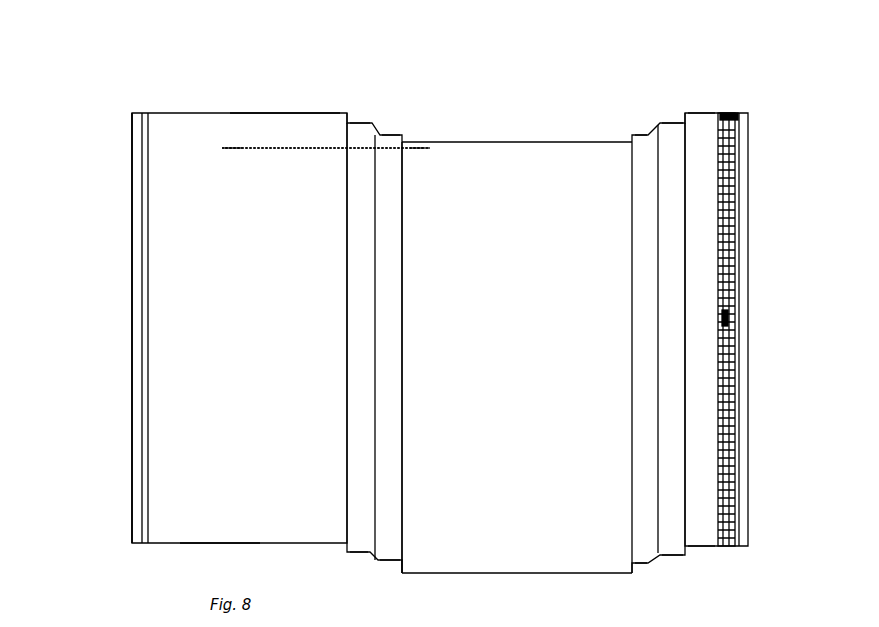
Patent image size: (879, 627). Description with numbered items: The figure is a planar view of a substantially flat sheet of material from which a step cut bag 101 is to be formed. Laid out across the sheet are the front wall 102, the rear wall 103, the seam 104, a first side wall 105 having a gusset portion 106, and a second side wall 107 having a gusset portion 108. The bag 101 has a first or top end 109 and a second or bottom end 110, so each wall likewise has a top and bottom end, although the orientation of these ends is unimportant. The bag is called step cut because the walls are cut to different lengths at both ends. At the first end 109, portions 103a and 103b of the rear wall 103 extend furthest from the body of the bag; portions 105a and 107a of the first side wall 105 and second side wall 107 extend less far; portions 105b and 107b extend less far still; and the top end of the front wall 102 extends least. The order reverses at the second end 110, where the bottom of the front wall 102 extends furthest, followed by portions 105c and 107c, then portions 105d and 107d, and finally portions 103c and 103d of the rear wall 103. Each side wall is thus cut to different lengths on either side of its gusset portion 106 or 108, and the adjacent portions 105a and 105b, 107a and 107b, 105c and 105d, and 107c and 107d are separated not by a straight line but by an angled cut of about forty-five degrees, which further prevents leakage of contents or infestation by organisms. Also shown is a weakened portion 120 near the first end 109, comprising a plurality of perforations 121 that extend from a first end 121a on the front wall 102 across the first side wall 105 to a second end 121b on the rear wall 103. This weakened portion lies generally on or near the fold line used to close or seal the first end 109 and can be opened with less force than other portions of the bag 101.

The step cut bag 101 is at (517, 325).
The front wall 102 is at (488, 558).
The rear wall 103 is at (172, 432).
The rear wall portion 103a is at (288, 124).
The rear wall portion 103b is at (702, 124).
The rear wall portion 103c is at (222, 538).
The rear wall portion 103d is at (703, 541).
The seam 104 is at (720, 195).
The first side wall 105 is at (390, 302).
The first side wall portion 105a is at (359, 136).
The first side wall portion 105b is at (394, 144).
The first side wall portion 105c is at (386, 559).
The first side wall portion 105d is at (350, 549).
The gusset portion 106 is at (375, 355).
The second side wall 107 is at (670, 275).
The second side wall portion 107a is at (670, 132).
The second side wall portion 107b is at (641, 141).
The second side wall portion 107c is at (644, 561).
The second side wall portion 107d is at (677, 552).
The gusset portion 108 is at (658, 357).
The first end 109 is at (103, 125).
The second end 110 is at (83, 549).
The weakened portion 120 is at (327, 166).
The perforations 121 is at (280, 149).
The first end of perforations 121a is at (430, 149).
The second end of perforations 121b is at (223, 149).